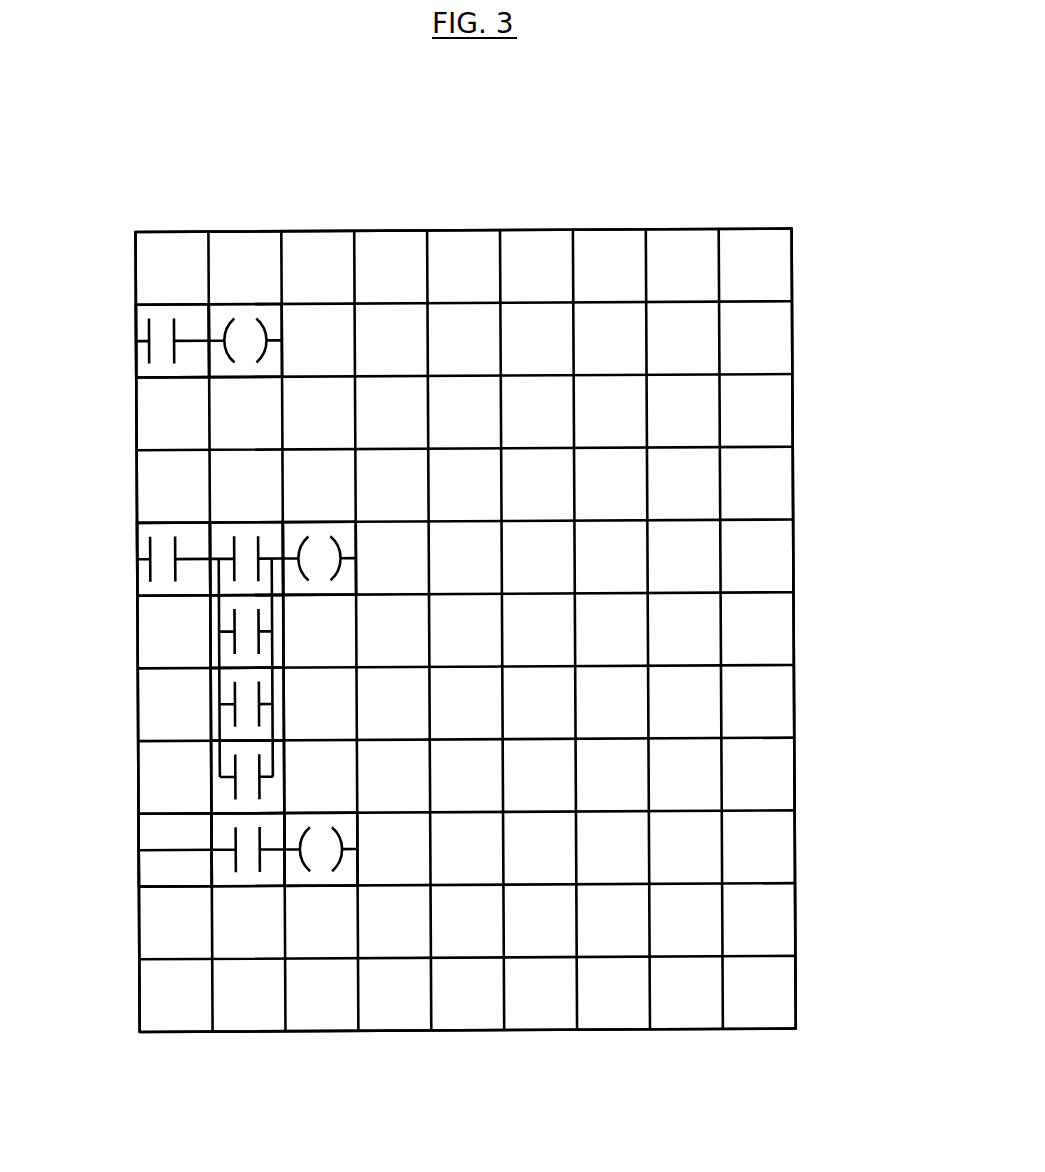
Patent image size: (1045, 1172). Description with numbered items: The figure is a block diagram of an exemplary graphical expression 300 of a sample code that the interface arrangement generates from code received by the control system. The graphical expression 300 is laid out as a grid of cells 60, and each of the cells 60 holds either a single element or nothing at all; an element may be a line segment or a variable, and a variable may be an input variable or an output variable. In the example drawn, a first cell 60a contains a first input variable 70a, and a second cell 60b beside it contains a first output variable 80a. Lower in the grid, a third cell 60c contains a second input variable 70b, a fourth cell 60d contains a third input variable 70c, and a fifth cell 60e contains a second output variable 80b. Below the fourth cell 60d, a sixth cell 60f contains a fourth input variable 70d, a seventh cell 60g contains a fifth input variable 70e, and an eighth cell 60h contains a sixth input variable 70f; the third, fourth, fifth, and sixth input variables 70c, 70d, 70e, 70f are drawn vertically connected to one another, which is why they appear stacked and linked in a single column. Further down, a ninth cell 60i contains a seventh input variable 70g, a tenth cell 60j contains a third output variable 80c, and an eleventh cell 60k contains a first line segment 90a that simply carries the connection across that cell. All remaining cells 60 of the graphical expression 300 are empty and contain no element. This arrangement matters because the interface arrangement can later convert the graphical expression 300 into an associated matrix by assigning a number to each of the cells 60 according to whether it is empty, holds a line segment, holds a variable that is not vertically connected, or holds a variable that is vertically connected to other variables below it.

The graphical expression 300 is at (737, 155).
The cells 60 is at (610, 337).
The first cell 60a is at (135, 356).
The second cell 60b is at (258, 317).
The third cell 60c is at (143, 590).
The fourth cell 60d is at (239, 538).
The fifth cell 60e is at (296, 537).
The sixth cell 60f is at (227, 662).
The seventh cell 60g is at (222, 732).
The eighth cell 60h is at (227, 807).
The ninth cell 60i is at (218, 873).
The tenth cell 60j is at (298, 877).
The eleventh cell 60k is at (153, 872).
The first input variable 70a is at (137, 323).
The second input variable 70b is at (140, 547).
The third input variable 70c is at (232, 540).
The fourth input variable 70d is at (222, 627).
The fifth input variable 70e is at (222, 700).
The sixth input variable 70f is at (222, 772).
The seventh input variable 70g is at (262, 863).
The first output variable 80a is at (220, 322).
The second output variable 80b is at (337, 535).
The third output variable 80c is at (338, 863).
The first line segment 90a is at (167, 850).